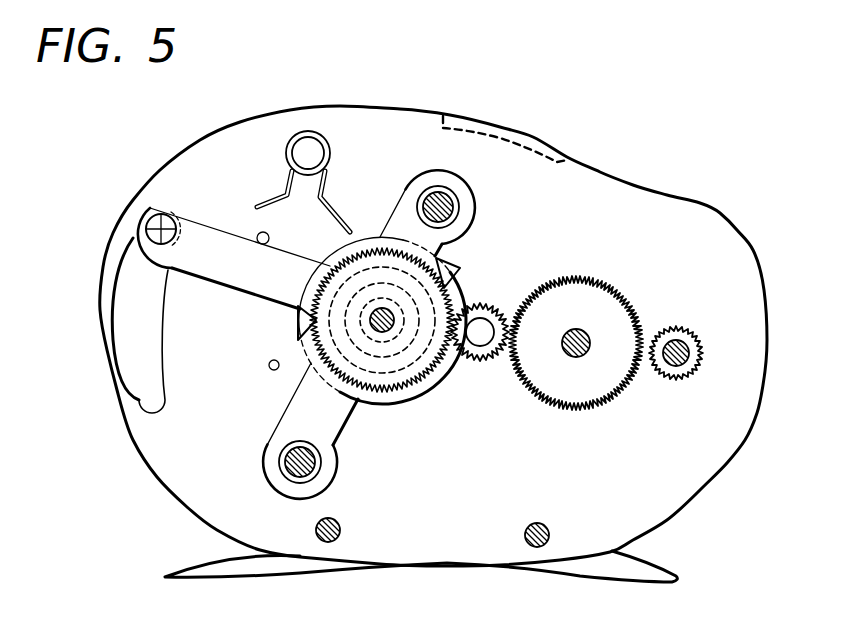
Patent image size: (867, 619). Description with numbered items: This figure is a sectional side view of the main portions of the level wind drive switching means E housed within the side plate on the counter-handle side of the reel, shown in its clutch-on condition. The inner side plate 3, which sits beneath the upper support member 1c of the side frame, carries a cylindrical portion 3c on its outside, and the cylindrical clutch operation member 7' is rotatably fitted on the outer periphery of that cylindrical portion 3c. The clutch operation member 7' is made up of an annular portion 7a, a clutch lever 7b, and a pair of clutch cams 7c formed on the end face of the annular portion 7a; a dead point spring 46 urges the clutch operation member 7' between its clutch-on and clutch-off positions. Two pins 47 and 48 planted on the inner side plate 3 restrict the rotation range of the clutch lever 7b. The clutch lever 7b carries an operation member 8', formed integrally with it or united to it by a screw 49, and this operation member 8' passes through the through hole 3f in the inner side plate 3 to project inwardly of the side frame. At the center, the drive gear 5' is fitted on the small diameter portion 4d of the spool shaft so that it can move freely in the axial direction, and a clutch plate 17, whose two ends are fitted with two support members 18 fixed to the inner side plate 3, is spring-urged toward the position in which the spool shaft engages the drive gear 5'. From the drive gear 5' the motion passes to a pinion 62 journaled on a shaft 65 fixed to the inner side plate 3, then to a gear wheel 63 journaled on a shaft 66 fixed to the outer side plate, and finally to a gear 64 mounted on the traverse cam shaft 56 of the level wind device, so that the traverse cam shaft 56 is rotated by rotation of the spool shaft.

The inner side plate 3 is at (734, 201).
The upper support member 1c is at (570, 156).
The through hole 3f is at (118, 330).
The operation member 8' is at (82, 250).
The screw 49 is at (150, 221).
The cylindrical clutch operation member 7' is at (234, 203).
The clutch lever 7b is at (205, 270).
The clutch cams 7c is at (456, 283).
The annular portion 7a is at (462, 312).
The clutch plate 17 is at (266, 447).
The support members 18 is at (432, 192).
The cylindrical portion 3c is at (377, 398).
The small diameter portion 4d is at (392, 331).
The drive gear 5' is at (428, 438).
The level wind drive switching means E is at (378, 173).
The dead point spring 46 is at (308, 130).
The pin 47 is at (260, 233).
The pin 48 is at (269, 366).
The pinion 62 is at (472, 358).
The shaft 65 is at (487, 357).
The gear wheel 63 is at (598, 404).
The shaft 66 is at (573, 358).
The traverse cam shaft 56 is at (677, 380).
The gear 64 is at (693, 374).